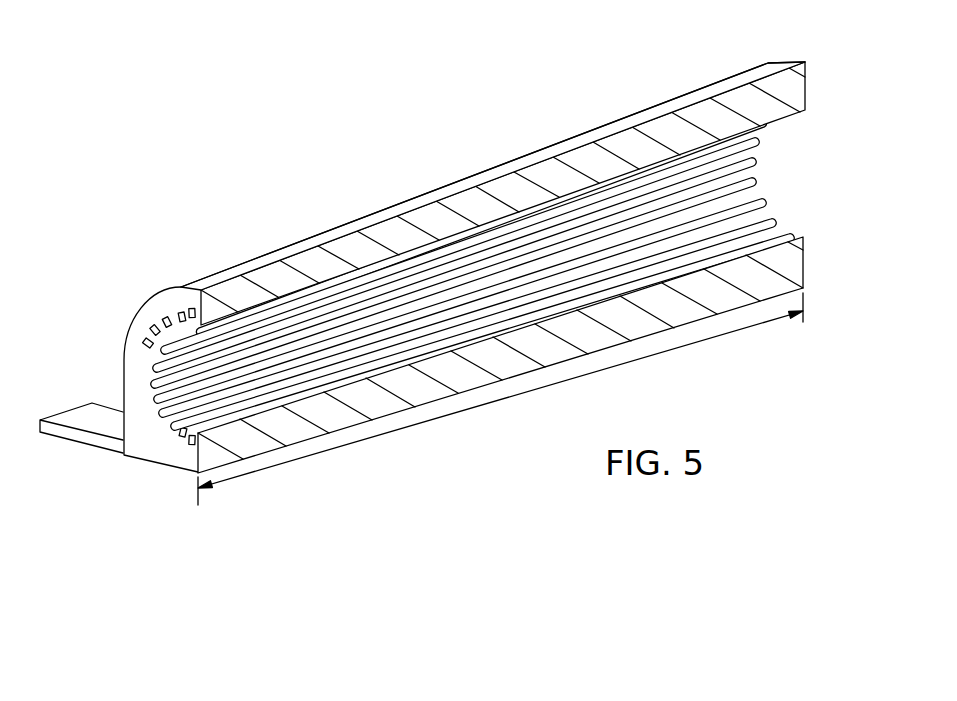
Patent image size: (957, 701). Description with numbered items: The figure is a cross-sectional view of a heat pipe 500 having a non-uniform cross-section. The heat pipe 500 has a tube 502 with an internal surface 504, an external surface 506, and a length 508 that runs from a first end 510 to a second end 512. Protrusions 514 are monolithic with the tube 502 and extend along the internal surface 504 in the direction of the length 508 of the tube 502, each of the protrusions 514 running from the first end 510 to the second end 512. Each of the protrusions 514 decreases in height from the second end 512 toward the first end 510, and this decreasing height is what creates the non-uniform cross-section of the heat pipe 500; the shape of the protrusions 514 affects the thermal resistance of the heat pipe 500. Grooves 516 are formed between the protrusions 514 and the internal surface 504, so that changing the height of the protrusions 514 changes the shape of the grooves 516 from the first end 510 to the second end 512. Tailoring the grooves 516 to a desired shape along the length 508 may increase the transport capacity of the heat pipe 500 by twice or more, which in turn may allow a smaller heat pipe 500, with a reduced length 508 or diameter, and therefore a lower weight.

The heat pipe 500 is at (442, 255).
The tube 502 is at (378, 210).
The internal surface 504 is at (300, 432).
The external surface 506 is at (480, 172).
The length 508 is at (506, 399).
The first end 510 is at (720, 50).
The second end 512 is at (114, 270).
The protrusions 514 is at (165, 445).
The grooves 516 is at (776, 197).